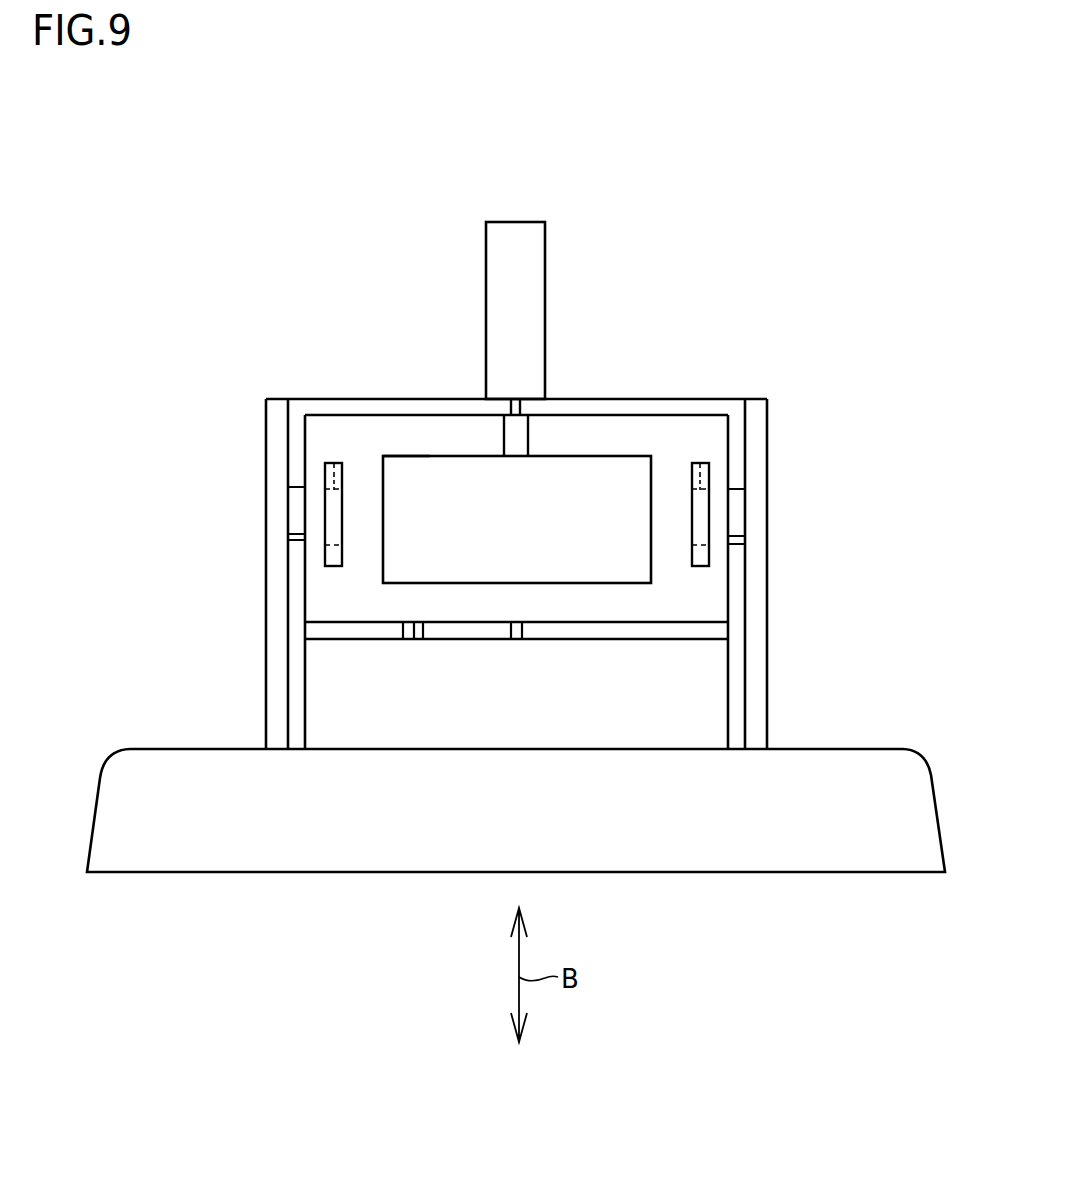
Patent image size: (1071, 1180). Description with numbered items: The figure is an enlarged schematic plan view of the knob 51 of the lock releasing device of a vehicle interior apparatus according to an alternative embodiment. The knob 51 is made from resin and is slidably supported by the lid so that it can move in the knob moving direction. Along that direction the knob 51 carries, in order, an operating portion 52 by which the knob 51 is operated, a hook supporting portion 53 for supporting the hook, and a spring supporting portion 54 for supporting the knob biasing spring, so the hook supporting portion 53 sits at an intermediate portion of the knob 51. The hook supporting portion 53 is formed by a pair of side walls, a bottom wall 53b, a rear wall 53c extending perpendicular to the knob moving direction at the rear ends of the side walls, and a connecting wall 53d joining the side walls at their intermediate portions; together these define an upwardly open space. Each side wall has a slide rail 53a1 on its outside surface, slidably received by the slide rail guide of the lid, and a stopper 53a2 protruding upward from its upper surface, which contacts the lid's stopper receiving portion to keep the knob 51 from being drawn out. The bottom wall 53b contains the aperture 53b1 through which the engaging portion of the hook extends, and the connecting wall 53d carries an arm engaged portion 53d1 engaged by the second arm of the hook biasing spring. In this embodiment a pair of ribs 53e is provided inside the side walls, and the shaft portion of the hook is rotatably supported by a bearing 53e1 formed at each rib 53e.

The knob 51 is at (731, 282).
The operating portion 52 is at (785, 850).
The hook supporting portion 53 is at (523, 552).
The slide rail 53a1 is at (793, 593).
The stopper 53a2 is at (805, 532).
The bottom wall 53b is at (575, 430).
The aperture 53b1 is at (410, 457).
The rear wall 53c is at (643, 405).
The connecting wall 53d is at (594, 631).
The arm engaged portion 53d1 is at (412, 632).
The ribs 53e is at (700, 468).
The bearing 53e1 is at (707, 503).
The spring supporting portion 54 is at (537, 303).